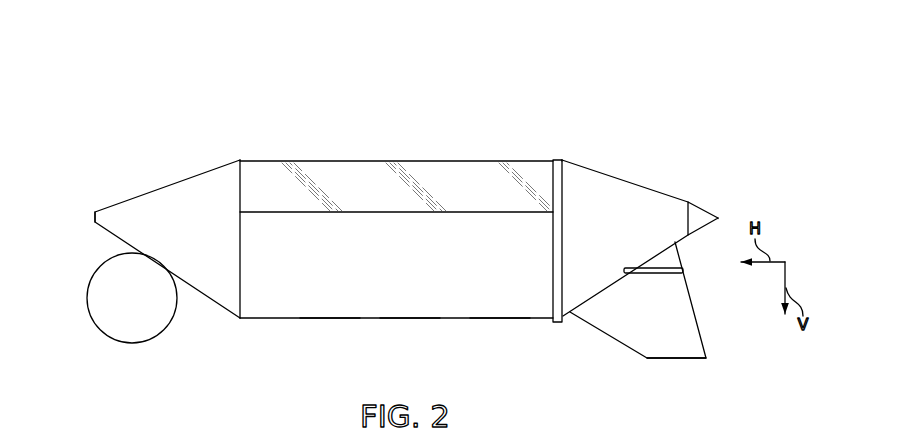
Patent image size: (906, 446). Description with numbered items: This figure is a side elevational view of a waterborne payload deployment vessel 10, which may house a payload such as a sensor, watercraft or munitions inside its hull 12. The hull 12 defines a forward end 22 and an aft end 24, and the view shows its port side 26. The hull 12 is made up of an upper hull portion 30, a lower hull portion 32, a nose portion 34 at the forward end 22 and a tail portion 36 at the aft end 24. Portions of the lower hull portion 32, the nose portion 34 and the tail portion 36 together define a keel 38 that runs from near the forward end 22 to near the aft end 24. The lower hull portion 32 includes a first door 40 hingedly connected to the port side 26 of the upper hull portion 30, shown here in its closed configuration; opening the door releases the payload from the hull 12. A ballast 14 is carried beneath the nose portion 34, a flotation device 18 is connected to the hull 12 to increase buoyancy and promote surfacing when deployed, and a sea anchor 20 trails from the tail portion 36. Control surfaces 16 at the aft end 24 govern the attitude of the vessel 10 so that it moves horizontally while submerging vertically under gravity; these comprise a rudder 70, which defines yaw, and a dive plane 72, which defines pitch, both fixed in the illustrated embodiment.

The waterborne payload deployment vessel 10 is at (603, 137).
The hull 12 is at (392, 162).
The ballast 14 is at (133, 344).
The control surfaces 16 is at (718, 349).
The flotation device 18 is at (477, 176).
The sea anchor 20 is at (703, 206).
The forward end 22 is at (63, 190).
The aft end 24 is at (748, 177).
The port side 26 is at (290, 299).
The upper hull portion 30 is at (340, 176).
The lower hull portion 32 is at (413, 300).
The nose portion 34 is at (160, 188).
The tail portion 36 is at (637, 182).
The keel 38 is at (335, 300).
The first door 40 is at (505, 300).
The rudder 70 is at (675, 362).
The dive plane 72 is at (684, 270).